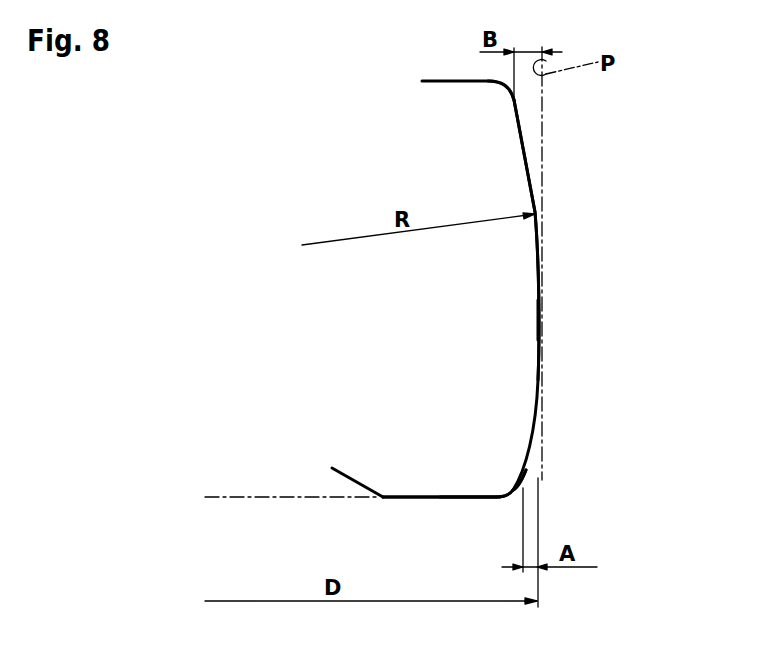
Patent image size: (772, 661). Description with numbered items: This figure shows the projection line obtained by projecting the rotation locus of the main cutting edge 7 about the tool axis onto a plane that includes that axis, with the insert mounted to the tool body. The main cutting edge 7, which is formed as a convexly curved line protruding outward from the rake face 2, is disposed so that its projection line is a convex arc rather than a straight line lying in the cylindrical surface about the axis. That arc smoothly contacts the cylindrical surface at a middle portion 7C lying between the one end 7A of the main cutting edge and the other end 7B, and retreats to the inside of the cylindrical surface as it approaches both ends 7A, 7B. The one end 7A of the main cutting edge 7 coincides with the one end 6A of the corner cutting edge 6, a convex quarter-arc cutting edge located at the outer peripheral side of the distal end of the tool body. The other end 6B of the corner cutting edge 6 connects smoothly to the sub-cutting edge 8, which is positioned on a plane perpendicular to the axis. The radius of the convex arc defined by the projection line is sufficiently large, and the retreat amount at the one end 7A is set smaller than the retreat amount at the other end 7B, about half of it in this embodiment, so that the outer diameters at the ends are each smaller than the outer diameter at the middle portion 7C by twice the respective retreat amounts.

The rake face 2 is at (503, 289).
The corner cutting edge 6 is at (517, 500).
The one end of the corner cutting edge 6A is at (518, 485).
The other end of the corner cutting edge 6B is at (497, 498).
The main cutting edge 7 is at (528, 162).
The one end of the main cutting edge 7A is at (518, 485).
The other end of the main cutting edge 7B is at (515, 100).
The middle portion of the main cutting edge 7C is at (540, 320).
The sub-cutting edge 8 is at (405, 498).